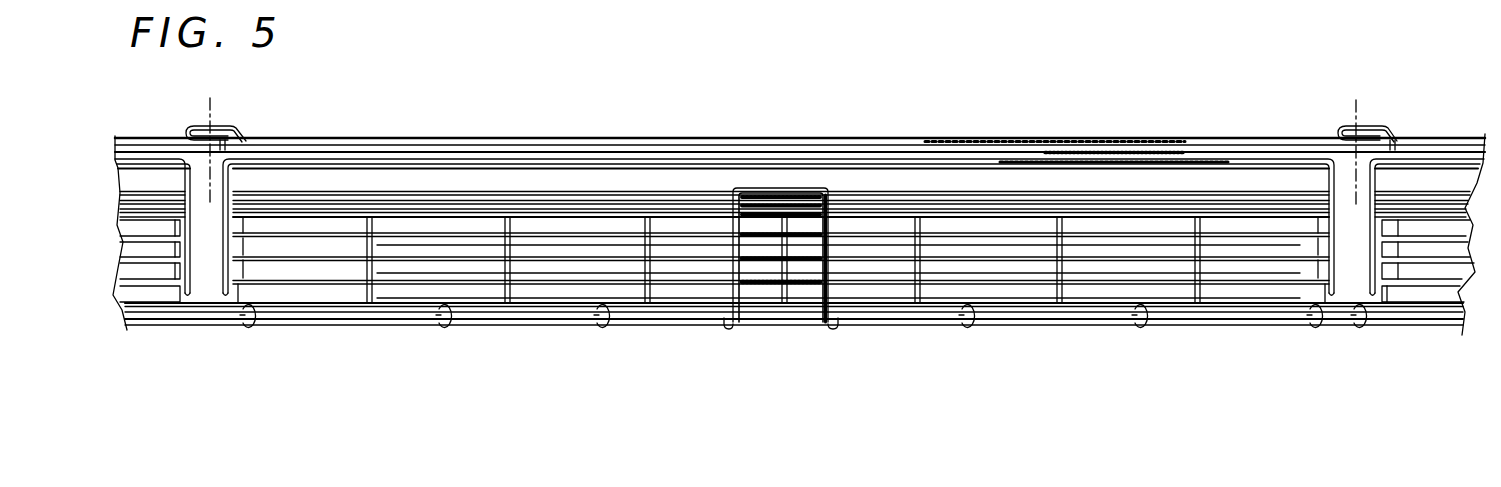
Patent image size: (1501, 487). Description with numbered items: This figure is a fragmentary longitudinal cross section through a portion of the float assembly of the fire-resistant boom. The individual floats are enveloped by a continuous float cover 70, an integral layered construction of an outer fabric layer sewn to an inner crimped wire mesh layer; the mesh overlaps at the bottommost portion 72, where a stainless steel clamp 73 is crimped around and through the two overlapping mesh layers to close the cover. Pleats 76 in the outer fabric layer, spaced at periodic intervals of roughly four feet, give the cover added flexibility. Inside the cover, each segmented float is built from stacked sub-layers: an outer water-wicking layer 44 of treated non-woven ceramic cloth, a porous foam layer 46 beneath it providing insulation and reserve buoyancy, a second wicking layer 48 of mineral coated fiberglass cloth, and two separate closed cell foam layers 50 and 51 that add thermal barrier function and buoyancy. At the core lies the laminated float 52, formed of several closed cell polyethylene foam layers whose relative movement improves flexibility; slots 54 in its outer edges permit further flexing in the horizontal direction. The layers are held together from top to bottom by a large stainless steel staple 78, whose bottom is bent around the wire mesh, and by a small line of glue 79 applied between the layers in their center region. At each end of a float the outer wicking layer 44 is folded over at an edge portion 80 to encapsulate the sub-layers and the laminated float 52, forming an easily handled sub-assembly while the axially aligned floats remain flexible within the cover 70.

The outer water-wicking layer 44 is at (1205, 163).
The porous foam layer 46 is at (352, 178).
The second wicking layer 48 is at (395, 195).
The closed cell foam layer 50 is at (447, 203).
The closed cell foam layer 51 is at (500, 212).
The laminated float 52 is at (562, 215).
The slots 54 is at (380, 290).
The float cover 70 is at (908, 130).
The bottommost portion 72 is at (745, 0).
The stainless steel clamp 73 is at (250, 330).
The pleats 76 is at (1353, 127).
The staple 78 is at (830, 212).
The line of glue 79 is at (797, 286).
The edge portion 80 is at (212, 200).